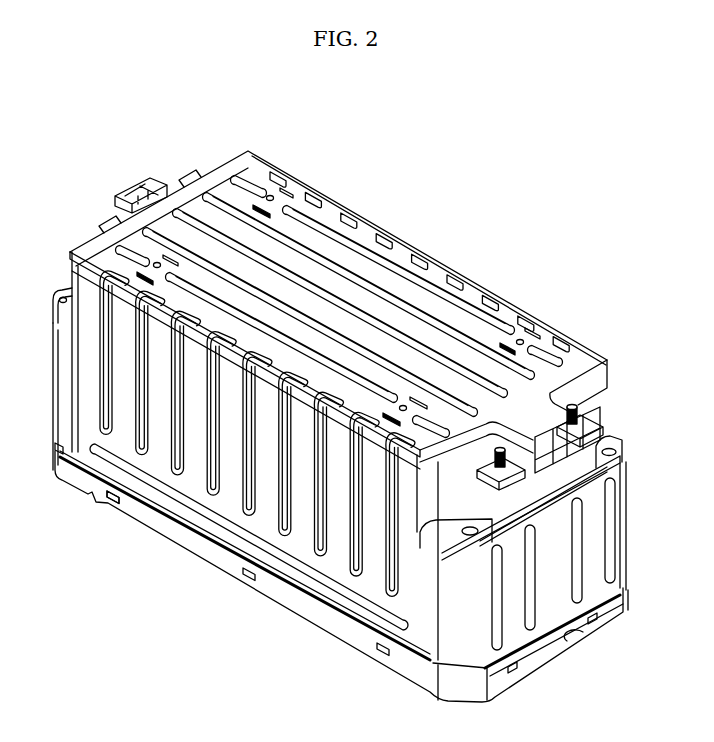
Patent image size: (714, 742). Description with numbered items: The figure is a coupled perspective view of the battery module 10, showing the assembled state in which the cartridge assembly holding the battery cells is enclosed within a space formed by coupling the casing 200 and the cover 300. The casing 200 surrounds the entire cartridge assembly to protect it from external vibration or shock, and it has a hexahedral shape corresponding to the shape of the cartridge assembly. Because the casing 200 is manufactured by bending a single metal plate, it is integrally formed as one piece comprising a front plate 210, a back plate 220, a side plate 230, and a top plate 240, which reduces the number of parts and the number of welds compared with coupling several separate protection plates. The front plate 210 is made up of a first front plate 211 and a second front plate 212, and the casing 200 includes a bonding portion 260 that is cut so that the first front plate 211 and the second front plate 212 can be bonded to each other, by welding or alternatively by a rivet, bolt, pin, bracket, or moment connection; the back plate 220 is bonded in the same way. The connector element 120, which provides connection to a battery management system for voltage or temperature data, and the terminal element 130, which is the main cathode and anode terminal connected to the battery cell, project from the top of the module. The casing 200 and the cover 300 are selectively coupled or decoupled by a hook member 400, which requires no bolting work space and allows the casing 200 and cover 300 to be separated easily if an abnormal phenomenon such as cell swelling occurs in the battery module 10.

The battery module 10 is at (97, 116).
The connector element 120 is at (155, 182).
The terminal element 130 is at (520, 464).
The casing 200 is at (478, 271).
The front plate 210 is at (554, 576).
The first front plate 211 is at (512, 637).
The second front plate 212 is at (592, 590).
The back plate 220 is at (47, 278).
The side plate 230 is at (302, 530).
The top plate 240 is at (338, 257).
The bonding portion 260 is at (548, 541).
The cover 300 is at (353, 640).
The hook member 400 is at (112, 503).